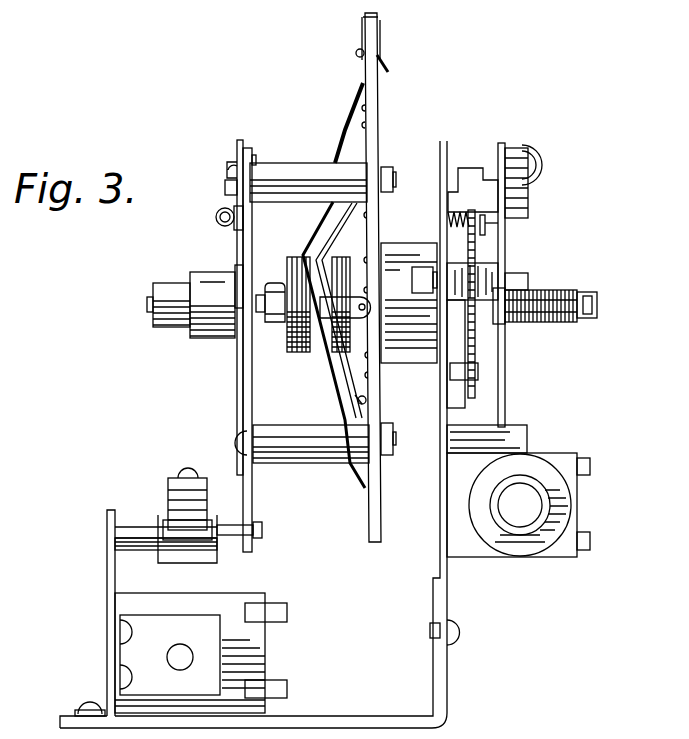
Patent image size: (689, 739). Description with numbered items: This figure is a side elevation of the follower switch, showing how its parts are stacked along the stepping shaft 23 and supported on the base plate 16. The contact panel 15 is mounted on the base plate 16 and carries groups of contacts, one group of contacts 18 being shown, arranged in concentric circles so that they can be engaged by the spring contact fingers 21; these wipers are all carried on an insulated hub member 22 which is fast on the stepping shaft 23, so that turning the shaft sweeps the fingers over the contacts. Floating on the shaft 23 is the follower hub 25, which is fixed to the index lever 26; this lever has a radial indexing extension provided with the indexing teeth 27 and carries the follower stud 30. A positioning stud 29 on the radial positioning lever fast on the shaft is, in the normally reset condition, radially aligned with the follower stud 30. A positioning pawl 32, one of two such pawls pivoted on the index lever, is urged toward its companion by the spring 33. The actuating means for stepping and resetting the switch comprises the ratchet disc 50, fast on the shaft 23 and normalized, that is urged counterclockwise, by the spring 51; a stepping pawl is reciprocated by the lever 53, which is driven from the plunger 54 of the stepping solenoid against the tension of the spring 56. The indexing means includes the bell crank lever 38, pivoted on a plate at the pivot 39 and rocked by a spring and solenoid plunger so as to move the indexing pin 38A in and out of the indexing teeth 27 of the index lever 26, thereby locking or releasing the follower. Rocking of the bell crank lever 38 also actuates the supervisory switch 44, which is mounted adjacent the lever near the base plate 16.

The contact panel 15 is at (383, 532).
The base plate 16 is at (381, 712).
The contacts 18 is at (366, 400).
The spring contact fingers 21 is at (353, 377).
The insulated hub member 22 is at (283, 345).
The stepping shaft 23 is at (147, 306).
The follower hub 25 is at (205, 338).
The index lever 26 is at (255, 480).
The indexing teeth 27 is at (257, 541).
The positioning stud 29 is at (228, 165).
The follower stud 30 is at (228, 188).
The positioning pawl 32 is at (240, 140).
The spring 33 is at (215, 220).
The bell crank lever 38 is at (168, 560).
The indexing pin 38A is at (262, 530).
The pivot 39 is at (148, 550).
The supervisory switch 44 is at (186, 506).
The ratchet disc 50 is at (480, 365).
The spring 51 is at (541, 330).
The lever 53 is at (506, 393).
The plunger 54 is at (527, 518).
The spring 56 is at (535, 183).